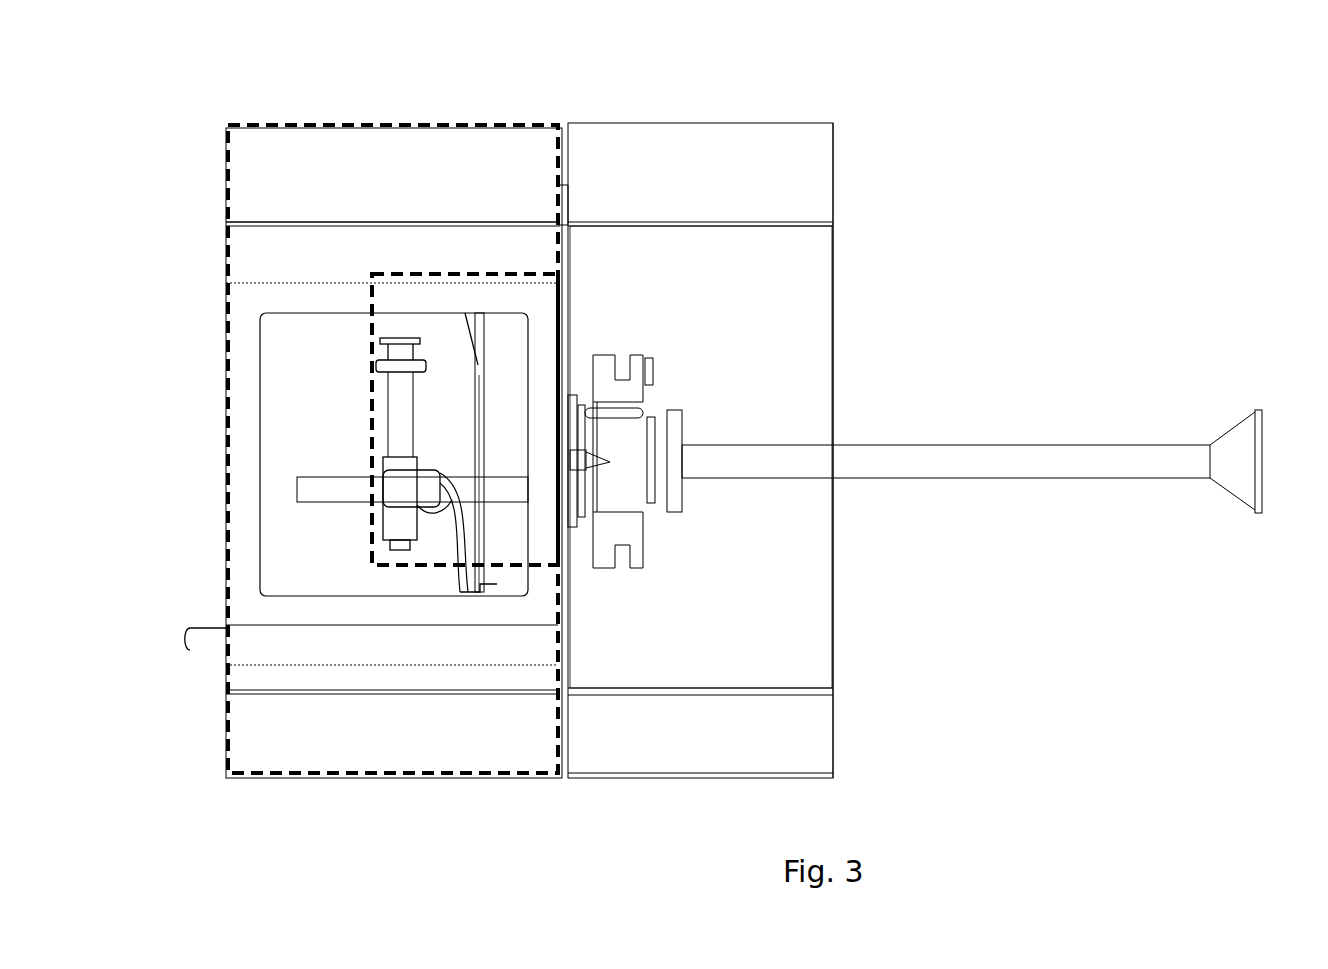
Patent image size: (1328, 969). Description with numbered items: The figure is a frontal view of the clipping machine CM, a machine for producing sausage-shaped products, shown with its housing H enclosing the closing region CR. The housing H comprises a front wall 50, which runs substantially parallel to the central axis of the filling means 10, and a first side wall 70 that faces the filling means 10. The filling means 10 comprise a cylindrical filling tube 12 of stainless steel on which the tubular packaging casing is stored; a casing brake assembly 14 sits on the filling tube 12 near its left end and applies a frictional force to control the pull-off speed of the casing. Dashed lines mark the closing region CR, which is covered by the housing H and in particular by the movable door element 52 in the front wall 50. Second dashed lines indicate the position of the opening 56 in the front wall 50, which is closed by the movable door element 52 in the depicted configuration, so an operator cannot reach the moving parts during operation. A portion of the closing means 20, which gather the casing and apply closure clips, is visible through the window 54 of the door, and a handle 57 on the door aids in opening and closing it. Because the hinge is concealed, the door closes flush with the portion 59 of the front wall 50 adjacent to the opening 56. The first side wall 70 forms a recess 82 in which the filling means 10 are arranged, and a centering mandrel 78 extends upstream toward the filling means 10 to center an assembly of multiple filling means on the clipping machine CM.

The filling means 10 is at (890, 543).
The filling tube 12 is at (968, 462).
The casing brake assembly 14 is at (630, 390).
The closing means 20 is at (323, 447).
The front wall 50 is at (518, 820).
The movable door element 52 is at (255, 265).
The window 54 is at (275, 372).
The opening 56 is at (226, 155).
The handle 57 is at (202, 640).
The portion of front wall 59 is at (642, 740).
The first side wall 70 is at (890, 200).
The centering mandrel 78 is at (577, 460).
The recess 82 is at (728, 310).
The closing region CR is at (447, 273).
The clipping machine CM is at (1165, 185).
The housing H is at (208, 825).